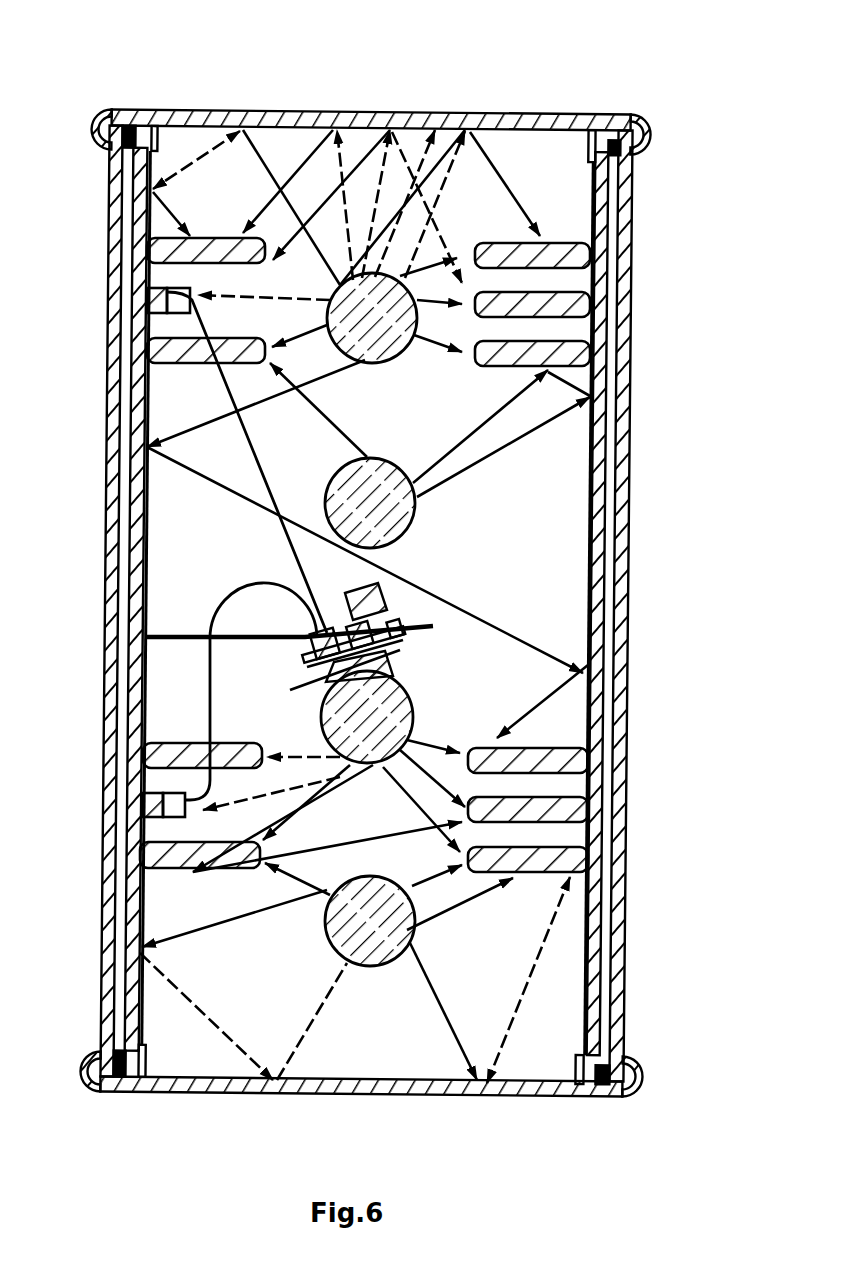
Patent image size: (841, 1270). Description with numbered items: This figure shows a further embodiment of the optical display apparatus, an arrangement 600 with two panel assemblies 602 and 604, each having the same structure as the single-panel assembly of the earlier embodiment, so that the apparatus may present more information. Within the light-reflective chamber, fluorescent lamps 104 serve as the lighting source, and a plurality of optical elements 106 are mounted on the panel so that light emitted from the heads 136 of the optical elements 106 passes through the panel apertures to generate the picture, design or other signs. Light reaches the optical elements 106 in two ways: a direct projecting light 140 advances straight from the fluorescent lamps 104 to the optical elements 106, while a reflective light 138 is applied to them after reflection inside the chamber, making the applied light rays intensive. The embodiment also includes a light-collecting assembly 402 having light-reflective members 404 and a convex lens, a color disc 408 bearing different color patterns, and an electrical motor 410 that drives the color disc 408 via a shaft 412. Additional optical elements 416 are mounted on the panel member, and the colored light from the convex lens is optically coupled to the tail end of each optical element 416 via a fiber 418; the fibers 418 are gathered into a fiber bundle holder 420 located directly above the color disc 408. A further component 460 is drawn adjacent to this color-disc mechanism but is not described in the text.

The heating apparatus 600 is at (76, 82).
The panel assembly 602 is at (104, 478).
The panel assembly 604 is at (633, 482).
The head 136 is at (133, 238).
The reflective light 138 is at (508, 192).
The optical element 106 is at (212, 243).
The direct projecting light 140 is at (437, 348).
The fluorescent lamp 104 is at (395, 527).
The light-collecting assembly 402 is at (393, 673).
The light-reflective member 404 is at (413, 705).
The color disc 408 is at (427, 624).
The electrical motor 410 is at (362, 596).
The shaft 412 is at (390, 655).
The optical element 416 is at (168, 293).
The fiber 418 is at (262, 465).
The fiber bundle holder 420 is at (317, 643).
The bracket 460 is at (307, 672).